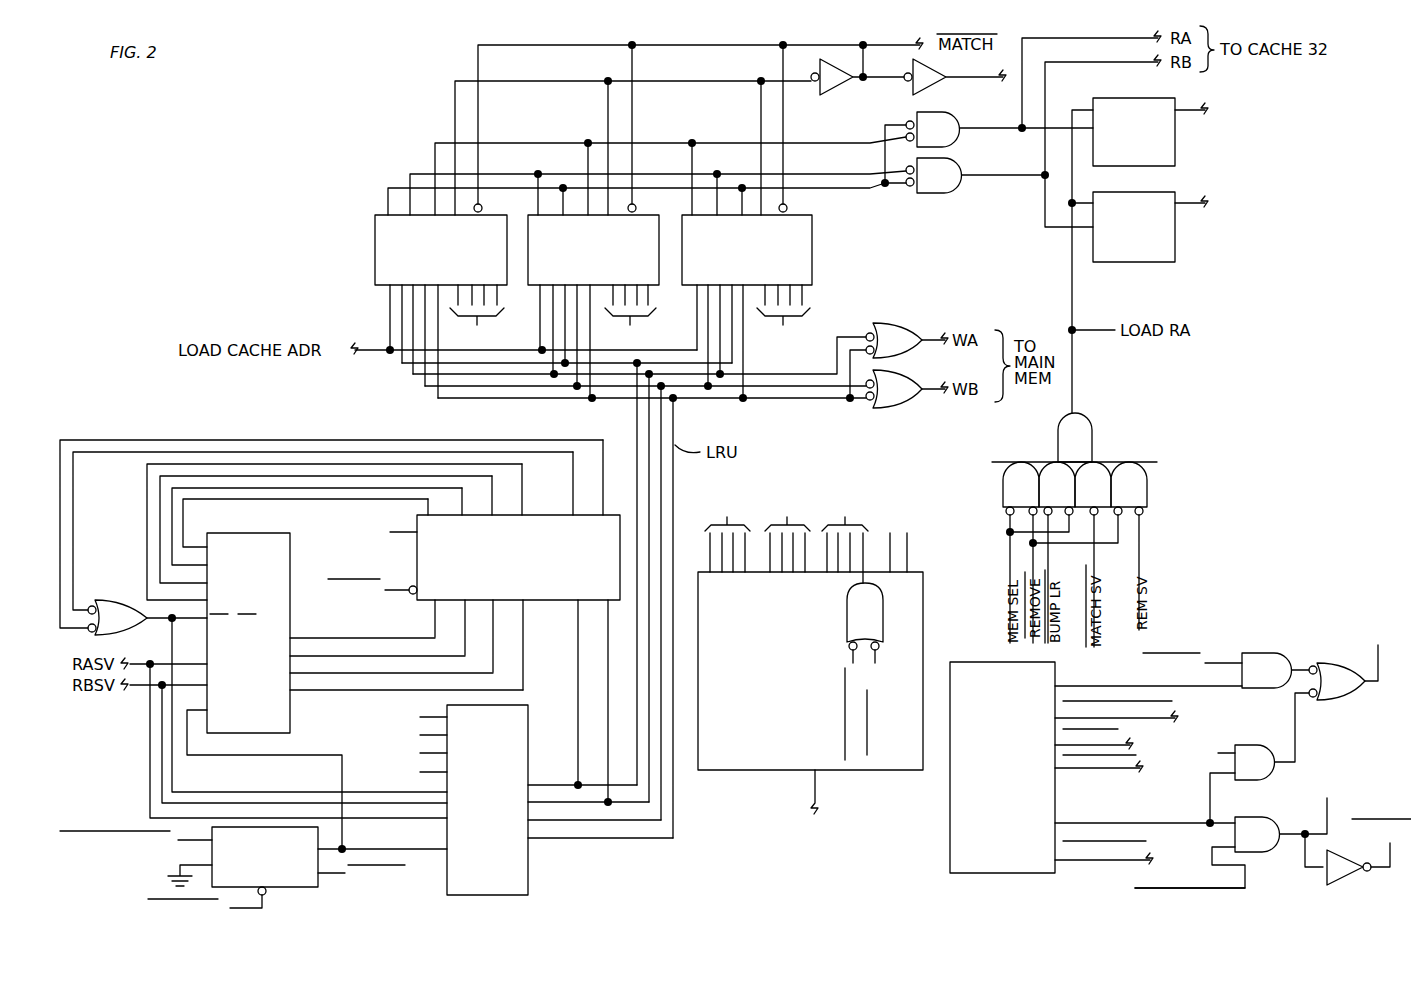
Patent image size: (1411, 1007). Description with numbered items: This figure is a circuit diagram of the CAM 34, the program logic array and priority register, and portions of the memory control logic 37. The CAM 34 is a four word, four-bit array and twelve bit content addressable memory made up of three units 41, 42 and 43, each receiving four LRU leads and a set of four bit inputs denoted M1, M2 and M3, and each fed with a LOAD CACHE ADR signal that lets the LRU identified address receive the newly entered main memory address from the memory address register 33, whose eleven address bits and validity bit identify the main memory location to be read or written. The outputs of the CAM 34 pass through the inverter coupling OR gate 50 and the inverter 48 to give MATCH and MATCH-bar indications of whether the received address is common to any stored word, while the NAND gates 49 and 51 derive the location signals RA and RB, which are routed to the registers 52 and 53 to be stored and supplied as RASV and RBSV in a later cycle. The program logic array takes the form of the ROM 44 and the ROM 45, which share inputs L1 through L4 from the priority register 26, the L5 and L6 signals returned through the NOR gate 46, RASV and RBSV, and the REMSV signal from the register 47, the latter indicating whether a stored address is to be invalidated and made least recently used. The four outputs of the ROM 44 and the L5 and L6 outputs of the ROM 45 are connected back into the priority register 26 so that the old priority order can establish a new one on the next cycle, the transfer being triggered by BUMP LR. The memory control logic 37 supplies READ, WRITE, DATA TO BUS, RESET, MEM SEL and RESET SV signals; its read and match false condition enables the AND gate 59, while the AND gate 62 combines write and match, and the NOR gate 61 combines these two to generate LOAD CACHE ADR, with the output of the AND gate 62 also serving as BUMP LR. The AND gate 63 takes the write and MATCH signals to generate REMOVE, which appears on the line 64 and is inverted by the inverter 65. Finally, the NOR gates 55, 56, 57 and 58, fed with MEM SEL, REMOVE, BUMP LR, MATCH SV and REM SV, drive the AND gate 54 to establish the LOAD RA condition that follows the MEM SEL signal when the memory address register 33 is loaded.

The CAM 34 is at (370, 164).
The CAM unit 41 is at (490, 276).
The CAM unit 42 is at (640, 276).
The CAM unit 43 is at (796, 276).
The inverter 48 is at (912, 64).
The inverter coupling OR gate 50 is at (857, 83).
The NAND gate 49 is at (943, 139).
The NAND gate 51 is at (943, 186).
The register 52 is at (1162, 160).
The register 53 is at (1162, 256).
The AND gate 54 is at (1084, 456).
The NOR gate 55 is at (1030, 500).
The NOR gate 56 is at (1066, 500).
The NOR gate 57 is at (1102, 500).
The NOR gate 58 is at (1138, 500).
The priority register 26 is at (605, 572).
The ROM 44 is at (237, 692).
The ROM 45 is at (514, 887).
The NOR gate 46 is at (127, 628).
The register 47 is at (304, 886).
The memory address register 33 is at (733, 752).
The memory control logic 37 is at (1037, 864).
The AND gate 59 is at (1269, 681).
The NOR gate 61 is at (1346, 692).
The AND gate 62 is at (1261, 773).
The AND gate 63 is at (1261, 845).
The MATCH line 64 is at (1205, 889).
The inverter 65 is at (1350, 880).